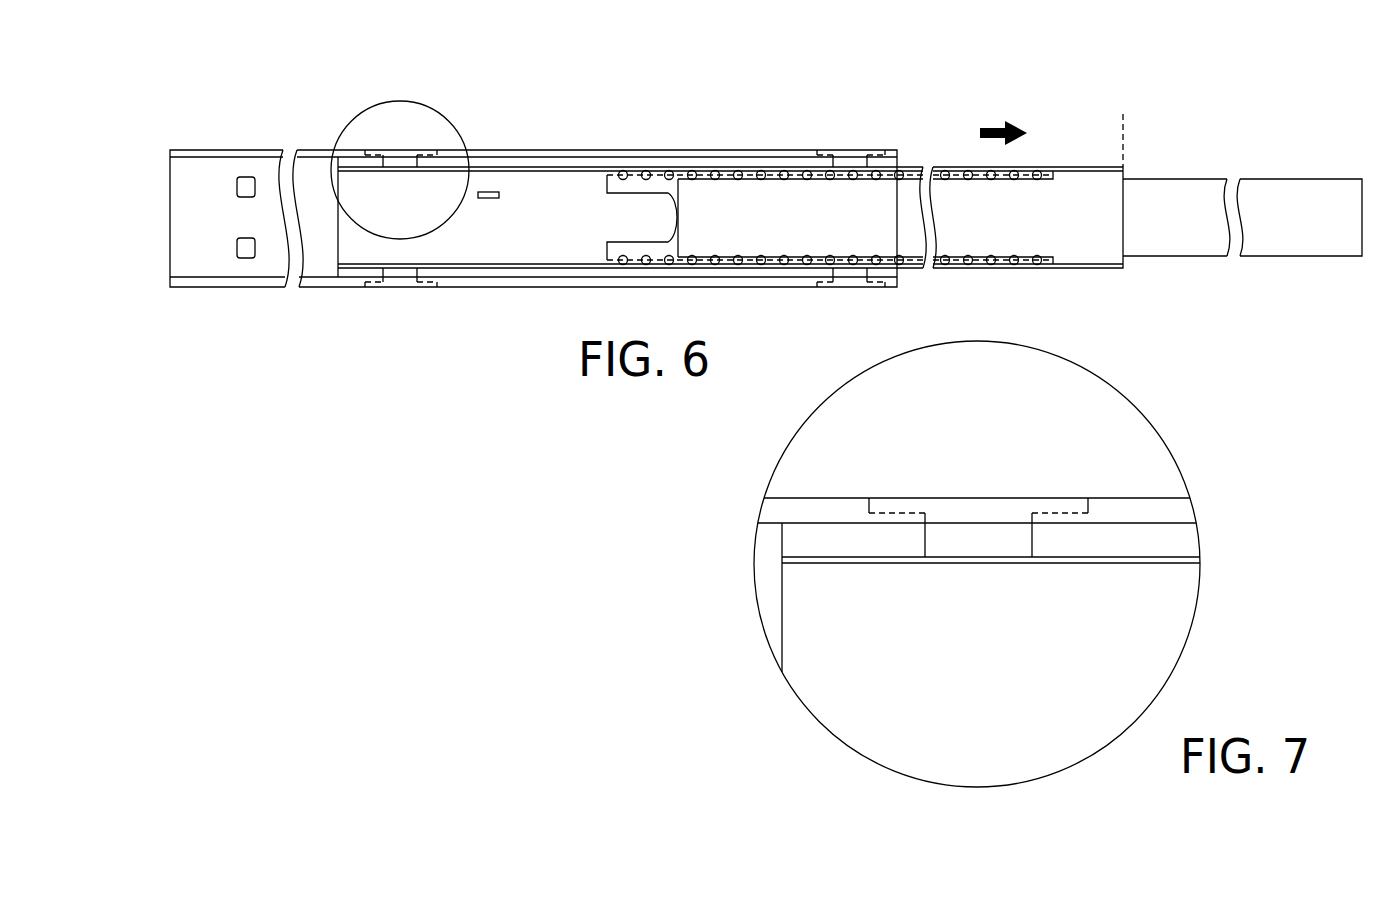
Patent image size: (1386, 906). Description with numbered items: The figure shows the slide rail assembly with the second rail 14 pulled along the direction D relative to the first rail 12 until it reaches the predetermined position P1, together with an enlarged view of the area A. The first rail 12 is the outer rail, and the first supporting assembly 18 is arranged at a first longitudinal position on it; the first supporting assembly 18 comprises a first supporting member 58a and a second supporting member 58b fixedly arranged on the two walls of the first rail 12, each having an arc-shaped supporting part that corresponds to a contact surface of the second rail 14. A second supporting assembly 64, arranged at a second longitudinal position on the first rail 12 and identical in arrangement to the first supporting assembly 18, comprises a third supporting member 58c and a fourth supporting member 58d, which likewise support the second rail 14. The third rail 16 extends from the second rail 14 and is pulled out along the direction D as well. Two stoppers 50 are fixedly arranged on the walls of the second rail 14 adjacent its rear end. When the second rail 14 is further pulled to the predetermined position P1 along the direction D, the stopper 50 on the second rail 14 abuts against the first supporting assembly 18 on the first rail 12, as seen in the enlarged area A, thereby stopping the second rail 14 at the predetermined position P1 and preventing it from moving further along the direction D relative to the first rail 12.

In FIG. 6, the first rail 12 is at (645, 157).
In FIG. 6, the second rail 14 is at (1107, 179).
In FIG. 6, the third rail 16 is at (1305, 190).
In FIG. 6, the first supporting assembly 18 is at (421, 140).
In FIG. 7, the first supporting assembly 18 is at (877, 501).
In FIG. 6, the stopper 50 is at (358, 163).
In FIG. 7, the stopper 50 is at (820, 547).
In FIG. 6, the first supporting member 58a is at (397, 155).
In FIG. 7, the first supporting member 58a is at (931, 517).
In FIG. 6, the second supporting member 58b is at (398, 282).
In FIG. 6, the third supporting member 58c is at (852, 155).
In FIG. 6, the fourth supporting member 58d is at (848, 280).
In FIG. 6, the second supporting assembly 64 is at (824, 141).
In FIG. 6, the area A is at (458, 122).
In FIG. 6, the direction D is at (993, 133).
In FIG. 6, the predetermined position P1 is at (1124, 130).